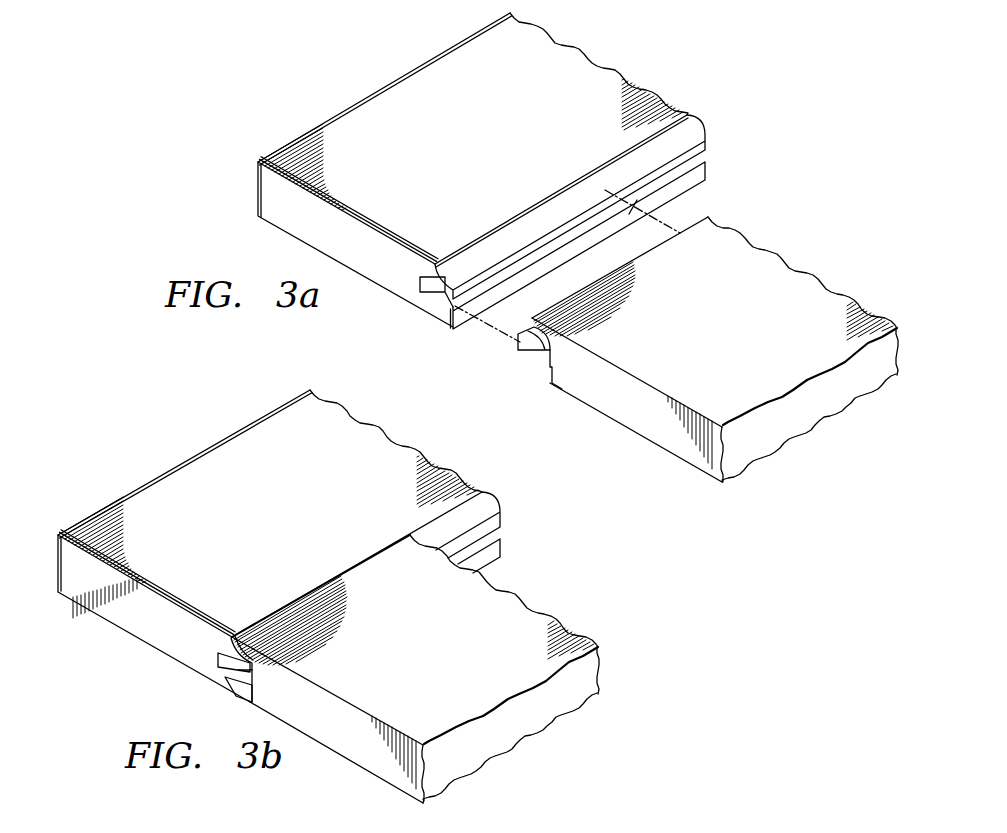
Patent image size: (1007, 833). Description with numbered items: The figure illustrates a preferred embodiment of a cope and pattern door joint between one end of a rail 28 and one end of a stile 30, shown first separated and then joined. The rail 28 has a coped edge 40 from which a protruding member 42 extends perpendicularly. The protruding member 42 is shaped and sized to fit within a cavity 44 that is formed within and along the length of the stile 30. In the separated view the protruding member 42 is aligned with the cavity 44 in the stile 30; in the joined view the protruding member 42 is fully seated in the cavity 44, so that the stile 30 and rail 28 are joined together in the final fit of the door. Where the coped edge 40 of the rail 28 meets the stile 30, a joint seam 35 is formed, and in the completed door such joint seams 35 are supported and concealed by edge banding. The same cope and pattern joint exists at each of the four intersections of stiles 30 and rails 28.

In FIG. 3A, the rail 28 is at (778, 268).
In FIG. 3B, the rail 28 is at (522, 610).
In FIG. 3A, the stile 30 is at (407, 88).
In FIG. 3B, the stile 30 is at (205, 463).
In FIG. 3B, the joint seam 35 is at (235, 652).
In FIG. 3A, the coped edge 40 is at (550, 373).
In FIG. 3A, the protruding member 42 is at (528, 348).
In FIG. 3A, the cavity 44 is at (438, 293).